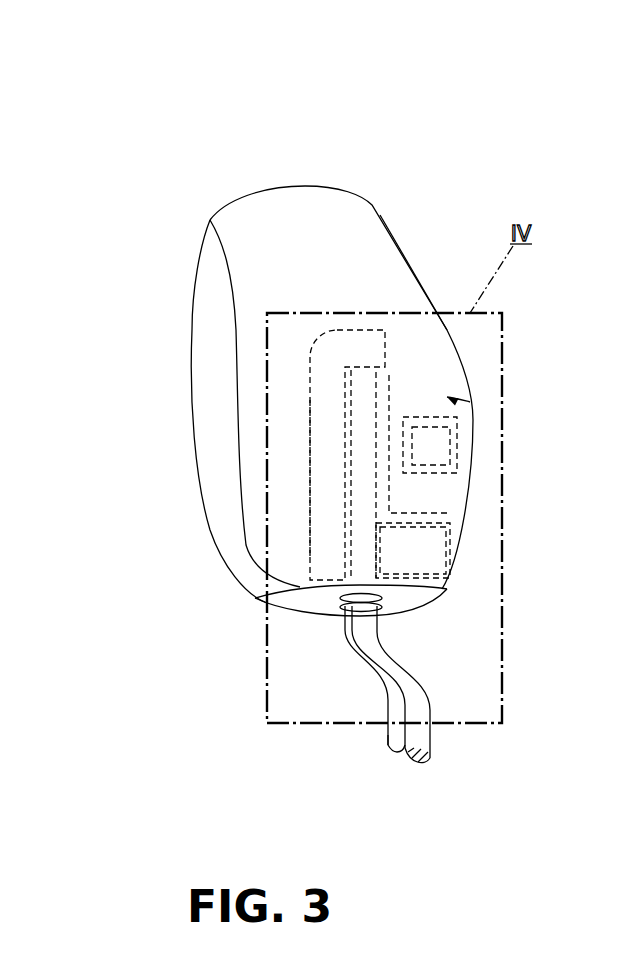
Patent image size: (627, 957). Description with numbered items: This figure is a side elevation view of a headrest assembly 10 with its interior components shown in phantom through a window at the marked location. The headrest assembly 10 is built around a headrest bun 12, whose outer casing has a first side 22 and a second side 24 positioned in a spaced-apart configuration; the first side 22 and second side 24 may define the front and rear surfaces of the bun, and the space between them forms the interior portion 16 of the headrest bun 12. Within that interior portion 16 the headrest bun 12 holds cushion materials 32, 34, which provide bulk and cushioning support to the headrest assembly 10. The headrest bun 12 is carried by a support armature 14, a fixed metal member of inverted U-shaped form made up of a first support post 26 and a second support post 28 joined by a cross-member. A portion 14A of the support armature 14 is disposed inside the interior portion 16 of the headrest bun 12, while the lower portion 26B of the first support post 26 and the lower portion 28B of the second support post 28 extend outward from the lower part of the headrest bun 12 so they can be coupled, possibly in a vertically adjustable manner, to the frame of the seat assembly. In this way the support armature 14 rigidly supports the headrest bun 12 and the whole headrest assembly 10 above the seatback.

The headrest assembly 10 is at (372, 158).
The headrest bun 12 is at (410, 222).
The support armature 14 is at (418, 652).
The portion of the support armature 14A is at (379, 545).
The interior portion 16 is at (293, 366).
The first side 22 is at (213, 268).
The second side 24 is at (418, 270).
The first support post 26 is at (387, 702).
The lower portion of the first support post 26B is at (395, 735).
The second support post 28 is at (433, 703).
The lower portion of the second support post 28B is at (420, 735).
The cushion material 32 is at (338, 335).
The cushion material 34 is at (465, 568).